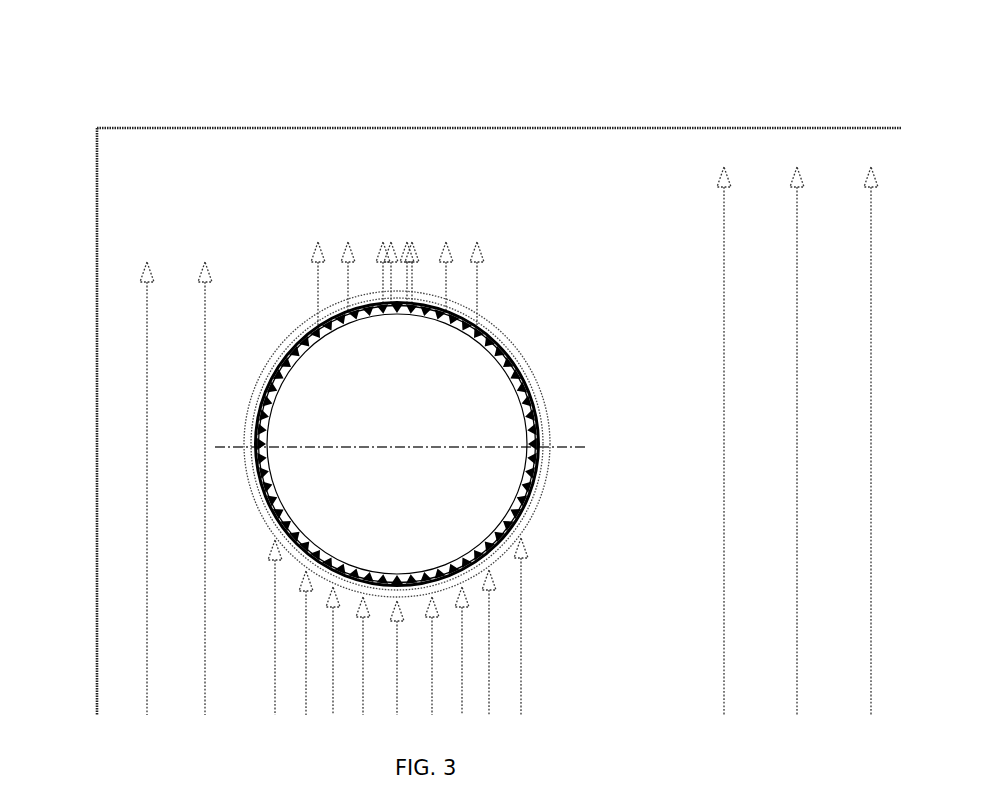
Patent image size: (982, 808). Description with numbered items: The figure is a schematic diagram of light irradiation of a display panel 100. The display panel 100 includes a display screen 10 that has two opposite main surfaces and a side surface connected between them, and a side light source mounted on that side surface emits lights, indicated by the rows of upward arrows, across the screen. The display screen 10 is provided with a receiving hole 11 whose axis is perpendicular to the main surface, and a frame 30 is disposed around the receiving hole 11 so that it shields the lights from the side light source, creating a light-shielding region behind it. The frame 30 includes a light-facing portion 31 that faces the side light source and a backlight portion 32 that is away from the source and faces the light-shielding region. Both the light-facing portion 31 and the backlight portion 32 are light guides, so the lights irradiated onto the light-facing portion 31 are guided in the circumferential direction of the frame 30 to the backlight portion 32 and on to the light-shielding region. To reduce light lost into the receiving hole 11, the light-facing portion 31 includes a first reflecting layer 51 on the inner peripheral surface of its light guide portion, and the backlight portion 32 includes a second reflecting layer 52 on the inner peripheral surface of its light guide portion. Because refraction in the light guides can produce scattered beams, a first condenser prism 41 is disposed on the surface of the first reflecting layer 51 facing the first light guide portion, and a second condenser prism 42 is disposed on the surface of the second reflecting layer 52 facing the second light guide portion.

The display panel 100 is at (512, 39).
The display screen 10 is at (285, 155).
The receiving hole 11 is at (300, 398).
The frame 30 is at (467, 444).
The light-facing portion 31 is at (548, 481).
The backlight portion 32 is at (548, 413).
The first condenser prism 41 is at (500, 540).
The second condenser prism 42 is at (507, 350).
The first reflecting layer 51 is at (323, 548).
The second reflecting layer 52 is at (312, 347).